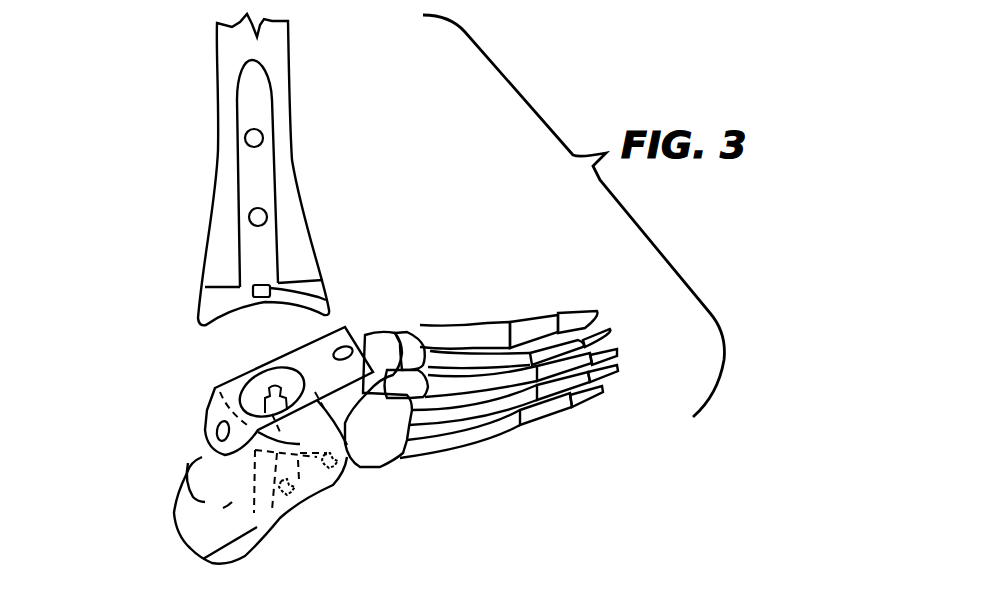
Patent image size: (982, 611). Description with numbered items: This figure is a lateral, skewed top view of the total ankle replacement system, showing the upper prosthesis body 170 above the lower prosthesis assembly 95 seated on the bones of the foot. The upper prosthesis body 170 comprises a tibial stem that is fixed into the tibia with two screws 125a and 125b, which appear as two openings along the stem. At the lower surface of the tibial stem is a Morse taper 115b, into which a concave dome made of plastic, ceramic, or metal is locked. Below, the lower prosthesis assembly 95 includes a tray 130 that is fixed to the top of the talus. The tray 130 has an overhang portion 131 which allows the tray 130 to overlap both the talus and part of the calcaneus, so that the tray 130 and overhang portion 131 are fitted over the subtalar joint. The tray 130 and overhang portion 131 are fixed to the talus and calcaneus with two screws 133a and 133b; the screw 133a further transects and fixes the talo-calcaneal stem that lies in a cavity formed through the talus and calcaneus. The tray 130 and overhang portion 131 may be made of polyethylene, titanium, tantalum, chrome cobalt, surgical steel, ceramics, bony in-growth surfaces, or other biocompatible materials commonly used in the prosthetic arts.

The upper prosthesis body 170 is at (190, 60).
The screw 125a is at (263, 138).
The screw 125b is at (267, 215).
The Morse taper 115b is at (326, 297).
The talar assembly 95 is at (200, 386).
The tray 130 is at (345, 330).
The screw 133a is at (212, 428).
The screw 133b is at (337, 352).
The overhang portion 131 is at (207, 453).